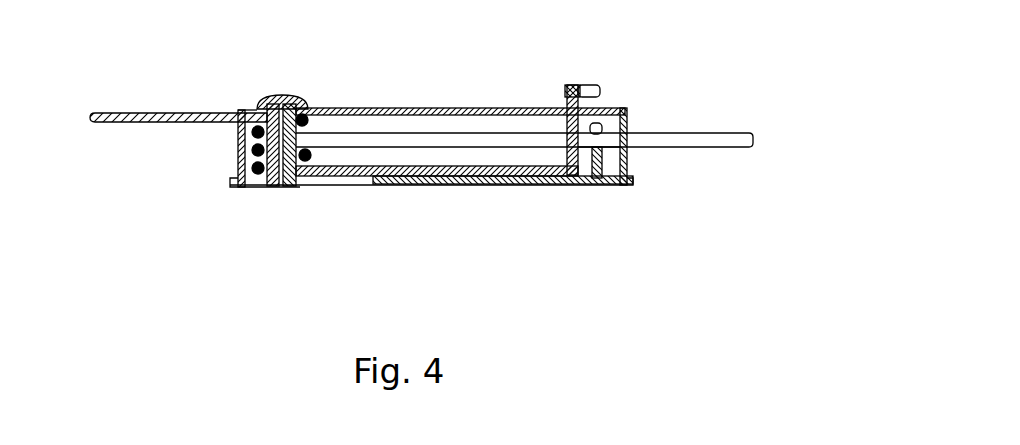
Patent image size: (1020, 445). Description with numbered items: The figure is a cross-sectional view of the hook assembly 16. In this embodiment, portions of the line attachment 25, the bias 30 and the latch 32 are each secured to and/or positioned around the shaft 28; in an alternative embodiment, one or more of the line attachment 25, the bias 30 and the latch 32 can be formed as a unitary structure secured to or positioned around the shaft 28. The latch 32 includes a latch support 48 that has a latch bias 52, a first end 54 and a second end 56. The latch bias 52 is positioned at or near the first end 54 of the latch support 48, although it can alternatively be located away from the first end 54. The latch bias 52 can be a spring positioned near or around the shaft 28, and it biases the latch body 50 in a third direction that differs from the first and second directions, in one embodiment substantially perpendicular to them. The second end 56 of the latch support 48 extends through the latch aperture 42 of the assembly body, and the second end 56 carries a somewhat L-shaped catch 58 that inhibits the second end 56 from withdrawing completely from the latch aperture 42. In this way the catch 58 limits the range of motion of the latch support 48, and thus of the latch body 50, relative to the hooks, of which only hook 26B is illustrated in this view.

The hook assembly 16 is at (680, 60).
The line attachment 25 is at (120, 125).
The hook 26B is at (698, 148).
The shaft 28 is at (290, 97).
The bias 30 is at (252, 130).
The latch 32 is at (478, 228).
The latch aperture 42 is at (565, 108).
The latch support 48 is at (398, 170).
The latch body 50 is at (442, 177).
The latch bias 52 is at (252, 167).
The first end 54 is at (291, 190).
The second end 56 is at (565, 85).
The catch 58 is at (587, 82).